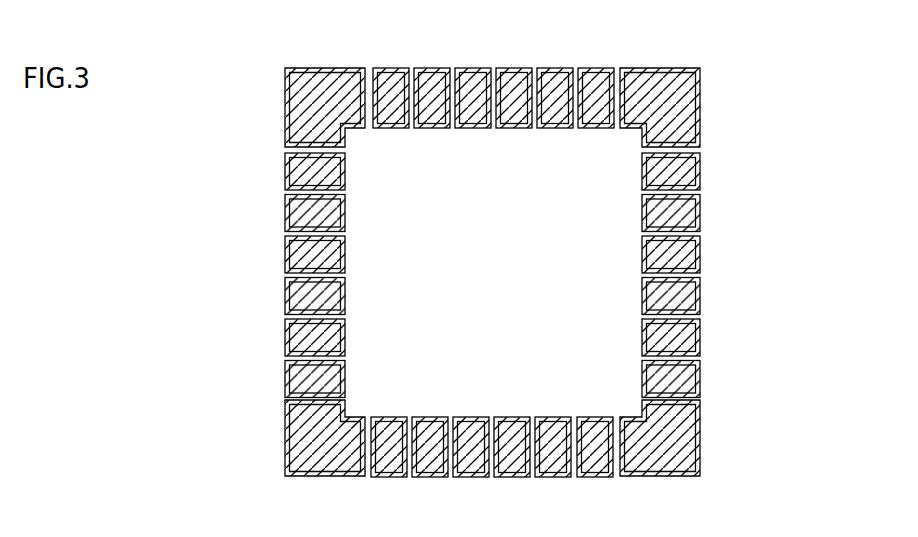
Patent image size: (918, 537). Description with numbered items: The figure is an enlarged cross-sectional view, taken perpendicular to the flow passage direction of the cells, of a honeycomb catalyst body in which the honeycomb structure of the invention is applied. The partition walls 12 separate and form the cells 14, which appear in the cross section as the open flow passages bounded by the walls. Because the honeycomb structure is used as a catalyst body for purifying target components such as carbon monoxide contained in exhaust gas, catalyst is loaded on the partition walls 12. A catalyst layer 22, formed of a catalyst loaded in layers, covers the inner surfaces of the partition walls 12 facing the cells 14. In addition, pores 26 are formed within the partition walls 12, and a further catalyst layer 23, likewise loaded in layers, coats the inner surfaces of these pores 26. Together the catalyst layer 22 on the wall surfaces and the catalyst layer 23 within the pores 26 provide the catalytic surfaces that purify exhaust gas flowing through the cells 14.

The partition walls 12 is at (475, 88).
The cells 14 is at (595, 175).
The catalyst layer 22 is at (342, 253).
The catalyst layer 23 is at (680, 310).
The pores 26 is at (287, 348).